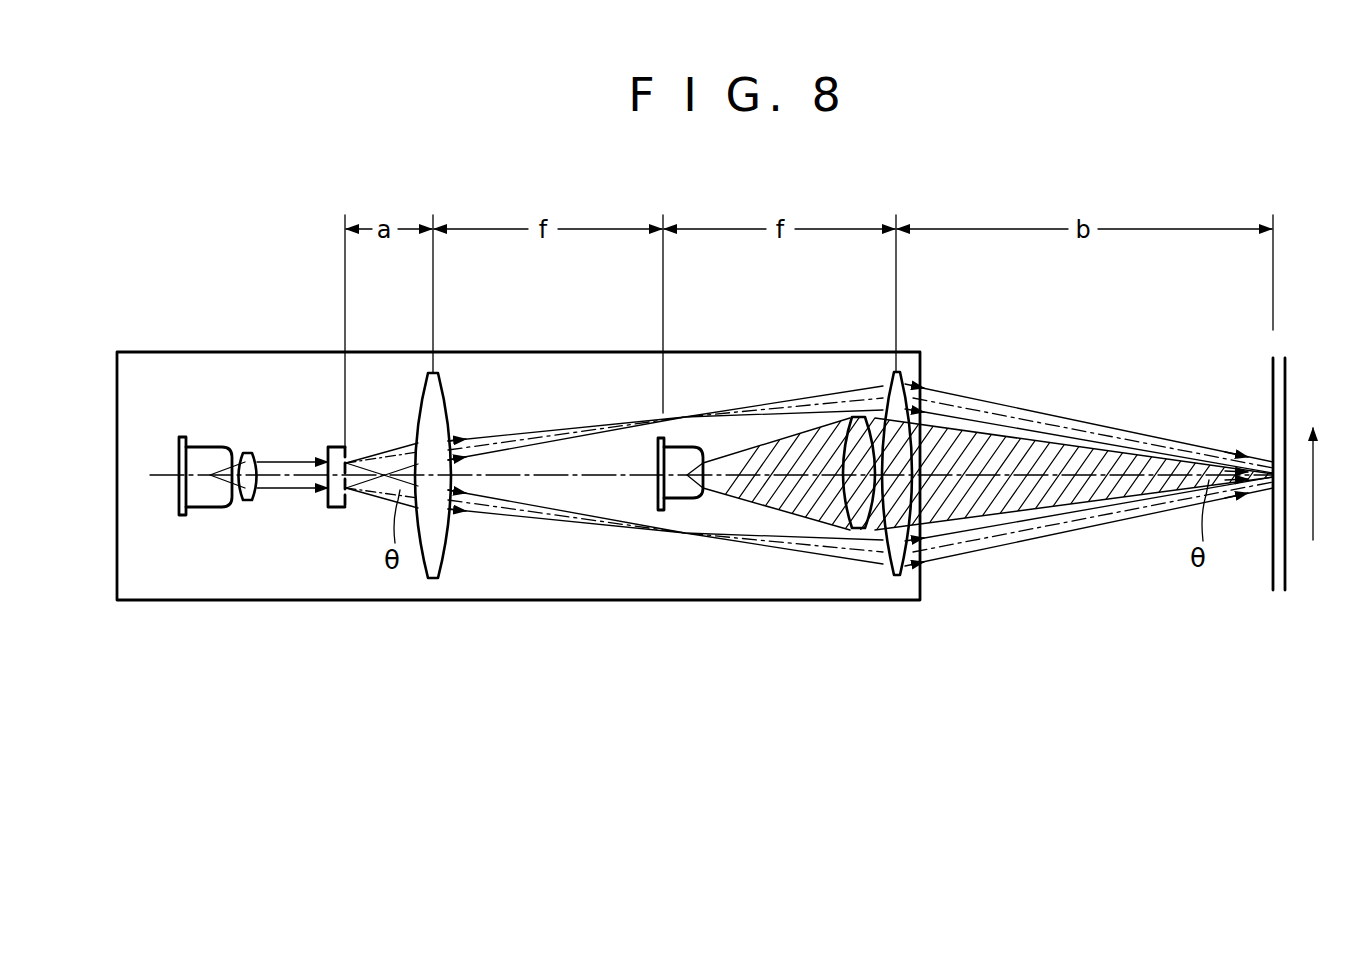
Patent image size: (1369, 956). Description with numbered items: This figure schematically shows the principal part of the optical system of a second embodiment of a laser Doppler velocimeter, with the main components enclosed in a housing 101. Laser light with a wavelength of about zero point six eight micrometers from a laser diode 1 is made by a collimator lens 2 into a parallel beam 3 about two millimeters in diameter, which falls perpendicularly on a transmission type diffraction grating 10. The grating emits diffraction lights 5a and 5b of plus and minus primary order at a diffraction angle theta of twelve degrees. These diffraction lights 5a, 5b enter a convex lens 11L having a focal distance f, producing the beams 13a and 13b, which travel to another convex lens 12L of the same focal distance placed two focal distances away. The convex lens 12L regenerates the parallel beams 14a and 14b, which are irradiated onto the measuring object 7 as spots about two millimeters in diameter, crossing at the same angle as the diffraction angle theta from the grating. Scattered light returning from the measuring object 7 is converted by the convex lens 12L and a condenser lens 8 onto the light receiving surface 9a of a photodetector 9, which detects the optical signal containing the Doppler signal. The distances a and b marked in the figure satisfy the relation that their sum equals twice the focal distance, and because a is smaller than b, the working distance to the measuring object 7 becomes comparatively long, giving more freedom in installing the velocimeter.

The housing 101 is at (192, 355).
The laser diode 1 is at (208, 503).
The collimator lens 2 is at (252, 452).
The parallel beam 3 is at (300, 490).
The diffraction grating 10 is at (335, 508).
The diffraction light 5a is at (395, 447).
The diffraction light 5b is at (378, 502).
The convex lens 11L is at (433, 580).
The beam 13a is at (500, 441).
The beam 13b is at (494, 508).
The photodetector 9 is at (682, 499).
The light receiving surface 9a is at (689, 470).
The condenser lens 8 is at (858, 523).
The convex lens 12L is at (900, 577).
The parallel beam 14a is at (964, 400).
The parallel beam 14b is at (970, 547).
The measuring object 7 is at (1286, 572).